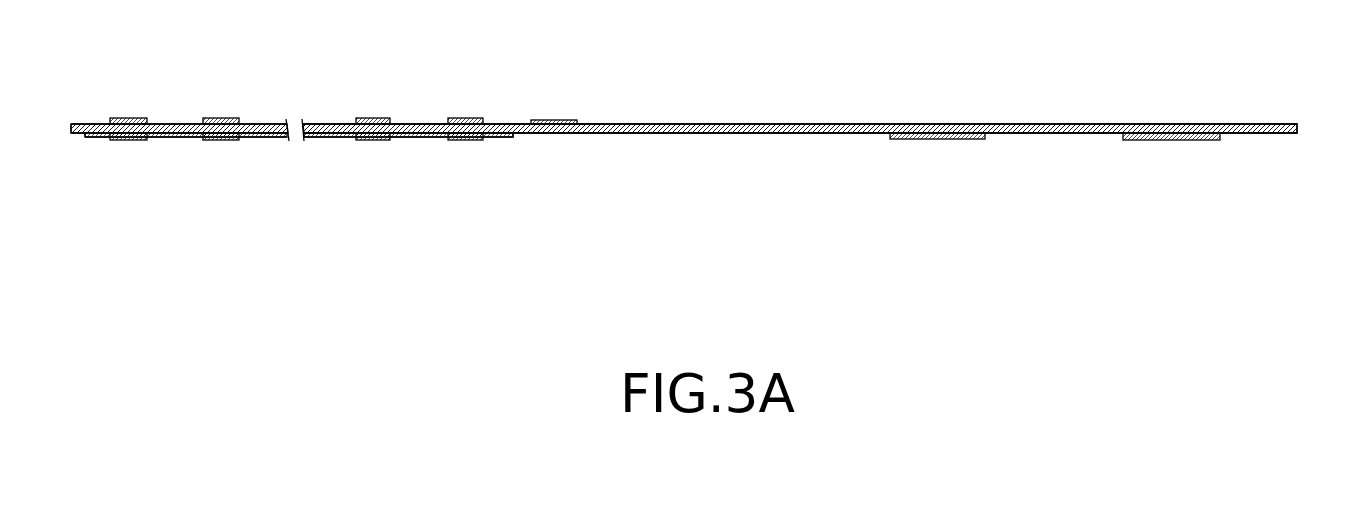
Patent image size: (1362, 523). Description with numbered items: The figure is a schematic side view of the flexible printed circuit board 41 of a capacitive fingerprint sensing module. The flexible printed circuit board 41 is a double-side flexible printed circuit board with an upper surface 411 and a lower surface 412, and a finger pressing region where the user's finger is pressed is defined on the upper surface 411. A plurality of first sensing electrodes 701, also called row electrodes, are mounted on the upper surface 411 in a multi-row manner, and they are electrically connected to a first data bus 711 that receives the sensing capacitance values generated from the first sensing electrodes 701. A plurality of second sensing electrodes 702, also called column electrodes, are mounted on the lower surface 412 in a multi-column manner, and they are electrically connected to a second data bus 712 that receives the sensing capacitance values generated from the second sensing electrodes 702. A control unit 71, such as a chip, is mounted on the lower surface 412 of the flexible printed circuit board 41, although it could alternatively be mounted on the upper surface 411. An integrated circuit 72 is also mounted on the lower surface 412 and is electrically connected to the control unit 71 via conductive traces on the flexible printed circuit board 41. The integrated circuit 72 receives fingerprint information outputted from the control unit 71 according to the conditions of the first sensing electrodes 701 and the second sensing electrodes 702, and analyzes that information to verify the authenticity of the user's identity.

The flexible printed circuit board 41 is at (801, 118).
The upper surface 411 is at (1243, 124).
The lower surface 412 is at (1257, 133).
The first sensing electrodes 701 is at (224, 111).
The second sensing electrodes 702 is at (222, 149).
The first data bus 711 is at (568, 120).
The second data bus 712 is at (415, 137).
The control unit 71 is at (932, 139).
The integrated circuit 72 is at (1167, 140).